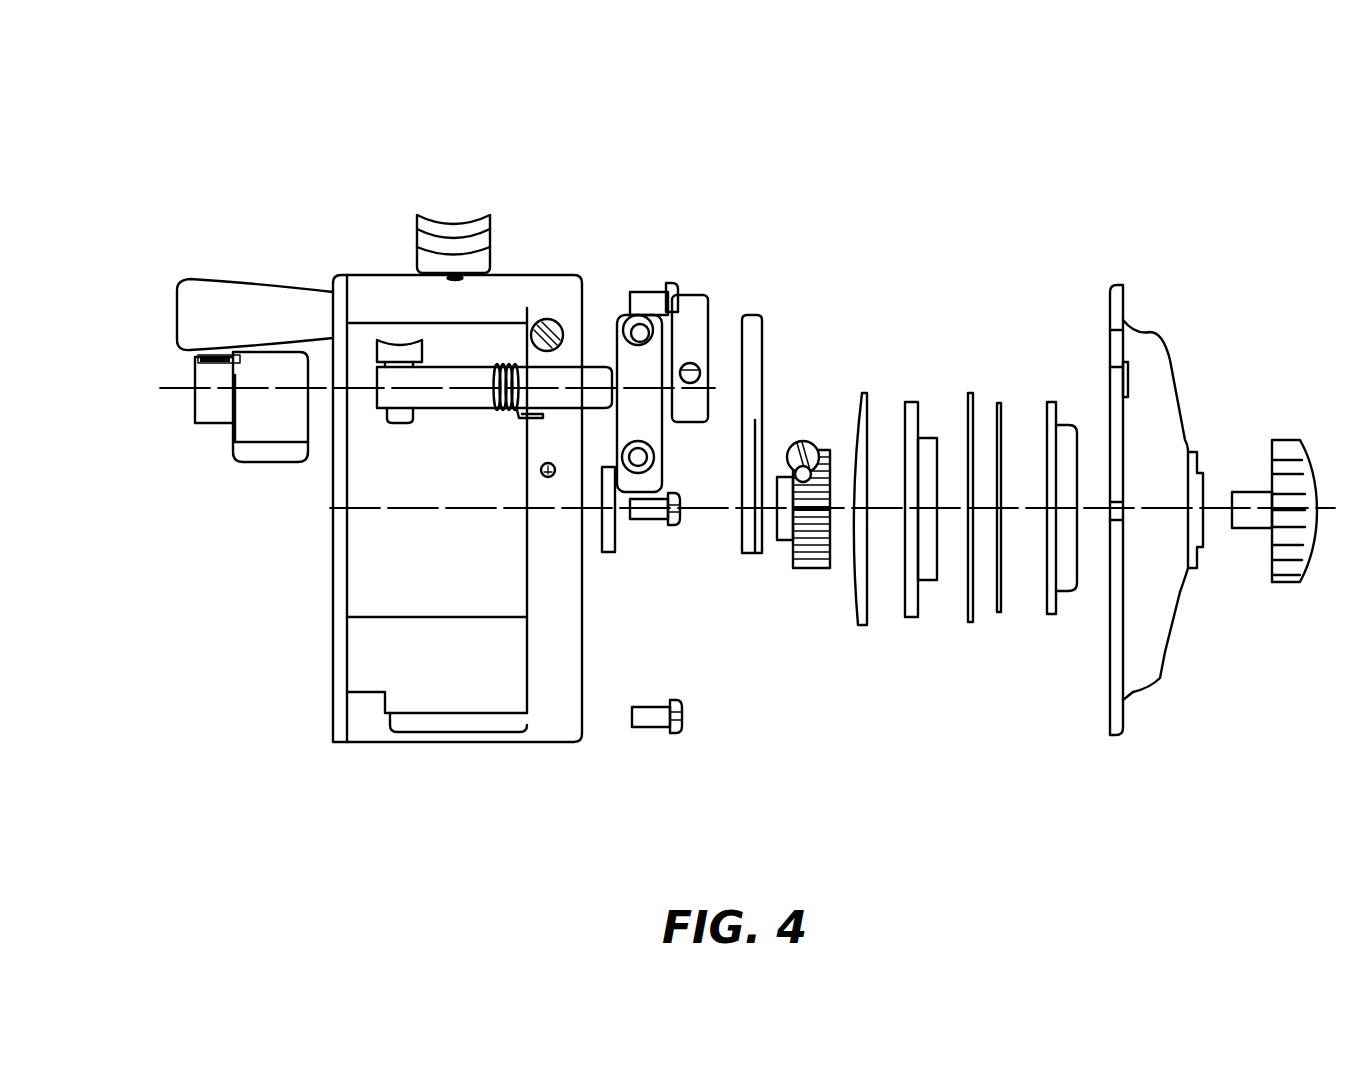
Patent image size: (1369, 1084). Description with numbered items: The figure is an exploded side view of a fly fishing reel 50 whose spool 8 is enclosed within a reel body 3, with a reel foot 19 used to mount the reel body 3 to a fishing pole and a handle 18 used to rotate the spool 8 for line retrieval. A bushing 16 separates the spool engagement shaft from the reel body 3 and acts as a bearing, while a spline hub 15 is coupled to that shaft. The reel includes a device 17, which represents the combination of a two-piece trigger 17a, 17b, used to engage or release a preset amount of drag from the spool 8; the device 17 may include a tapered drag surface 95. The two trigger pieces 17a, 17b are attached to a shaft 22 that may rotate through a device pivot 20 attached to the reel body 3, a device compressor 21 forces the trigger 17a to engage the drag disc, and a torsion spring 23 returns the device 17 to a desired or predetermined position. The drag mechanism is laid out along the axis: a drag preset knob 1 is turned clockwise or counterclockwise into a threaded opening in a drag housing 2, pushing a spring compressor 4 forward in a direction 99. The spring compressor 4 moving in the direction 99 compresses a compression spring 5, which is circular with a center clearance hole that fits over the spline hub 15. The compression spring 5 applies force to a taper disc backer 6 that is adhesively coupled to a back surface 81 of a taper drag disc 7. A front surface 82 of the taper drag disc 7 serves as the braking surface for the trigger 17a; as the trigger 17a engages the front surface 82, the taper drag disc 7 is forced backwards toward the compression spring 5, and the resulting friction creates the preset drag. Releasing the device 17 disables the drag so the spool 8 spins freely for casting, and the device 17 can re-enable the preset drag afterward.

The fly fishing reel 50 is at (240, 158).
The handle 18 is at (273, 298).
The spool 8 is at (342, 280).
The reel foot 19 is at (448, 242).
The device pivot 20 is at (627, 323).
The device compressor 21 is at (692, 302).
The trigger 17a is at (752, 322).
The device 17 is at (228, 459).
The trigger 17b is at (264, 453).
The shaft 22 is at (452, 400).
The torsion spring 23 is at (498, 413).
The bushing 16 is at (612, 550).
The reel body 3 is at (565, 730).
The spline hub 15 is at (828, 450).
The taper drag disc 7 is at (860, 400).
The taper disc backer 6 is at (910, 400).
The compression spring 5 is at (970, 393).
The spring compressor 4 is at (1052, 405).
The drag housing 2 is at (1160, 385).
The drag preset knob 1 is at (1293, 440).
The tapered drag surface 95 is at (757, 503).
The front surface 82 is at (856, 593).
The back surface 81 is at (868, 603).
The direction 99 is at (728, 793).